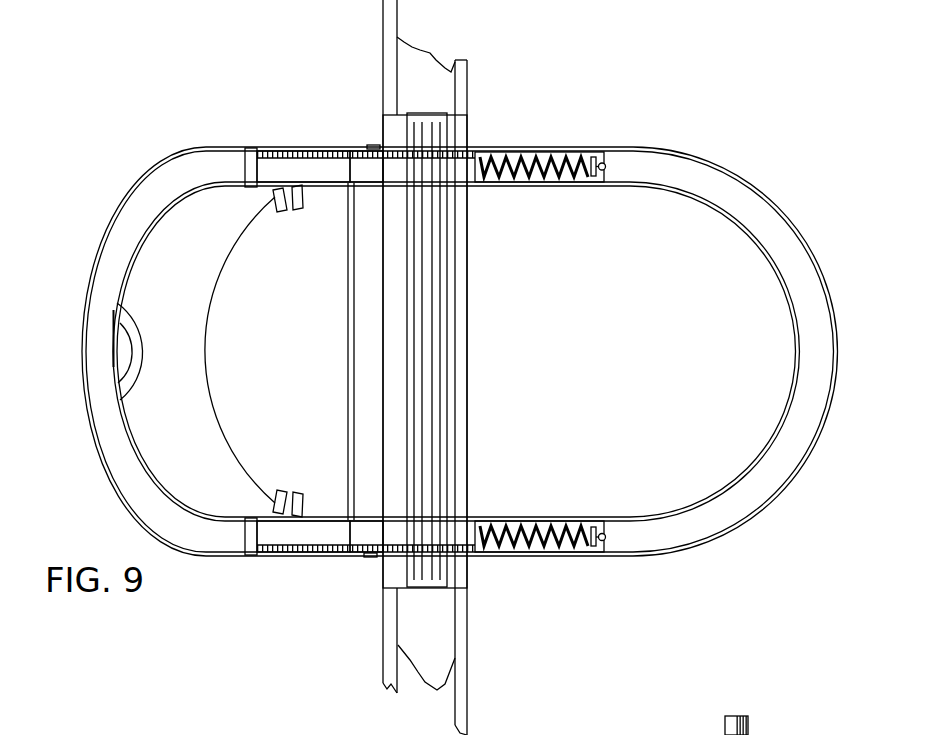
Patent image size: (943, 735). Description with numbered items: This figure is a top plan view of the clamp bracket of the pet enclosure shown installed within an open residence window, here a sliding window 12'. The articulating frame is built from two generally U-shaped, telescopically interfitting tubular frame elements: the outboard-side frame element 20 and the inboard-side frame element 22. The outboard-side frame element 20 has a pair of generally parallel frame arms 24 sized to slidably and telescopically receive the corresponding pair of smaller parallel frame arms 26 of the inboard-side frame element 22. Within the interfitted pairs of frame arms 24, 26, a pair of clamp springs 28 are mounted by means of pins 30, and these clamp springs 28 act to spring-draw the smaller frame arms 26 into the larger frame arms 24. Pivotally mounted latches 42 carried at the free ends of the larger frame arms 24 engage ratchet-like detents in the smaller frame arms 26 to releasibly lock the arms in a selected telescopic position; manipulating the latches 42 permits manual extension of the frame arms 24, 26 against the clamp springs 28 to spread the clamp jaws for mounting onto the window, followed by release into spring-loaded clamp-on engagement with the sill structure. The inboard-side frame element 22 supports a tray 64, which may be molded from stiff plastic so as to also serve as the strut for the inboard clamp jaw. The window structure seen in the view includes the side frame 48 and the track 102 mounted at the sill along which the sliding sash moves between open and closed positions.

The sliding window 12' is at (442, 367).
The outboard-side U-shaped frame element 20 is at (784, 223).
The inboard-side frame element 22 is at (82, 355).
The frame arms 24 is at (560, 367).
The frame arms 26 is at (316, 142).
The clamp springs 28 is at (543, 157).
The pins 30 is at (606, 163).
The latches 42 is at (353, 602).
The side frame 48 is at (444, 663).
The tray 64 is at (172, 234).
The track 102 is at (456, 588).